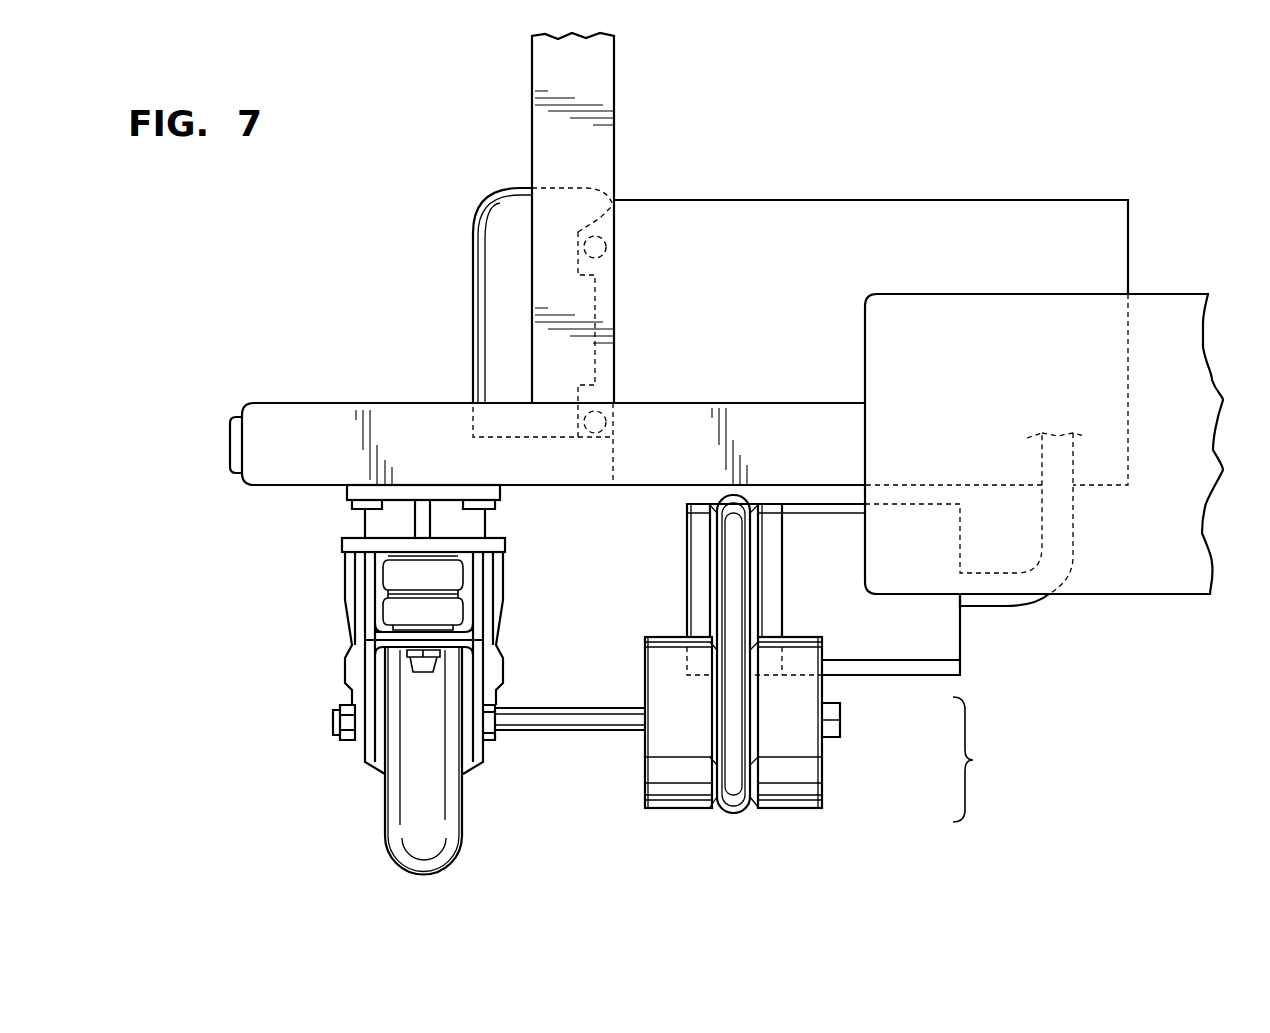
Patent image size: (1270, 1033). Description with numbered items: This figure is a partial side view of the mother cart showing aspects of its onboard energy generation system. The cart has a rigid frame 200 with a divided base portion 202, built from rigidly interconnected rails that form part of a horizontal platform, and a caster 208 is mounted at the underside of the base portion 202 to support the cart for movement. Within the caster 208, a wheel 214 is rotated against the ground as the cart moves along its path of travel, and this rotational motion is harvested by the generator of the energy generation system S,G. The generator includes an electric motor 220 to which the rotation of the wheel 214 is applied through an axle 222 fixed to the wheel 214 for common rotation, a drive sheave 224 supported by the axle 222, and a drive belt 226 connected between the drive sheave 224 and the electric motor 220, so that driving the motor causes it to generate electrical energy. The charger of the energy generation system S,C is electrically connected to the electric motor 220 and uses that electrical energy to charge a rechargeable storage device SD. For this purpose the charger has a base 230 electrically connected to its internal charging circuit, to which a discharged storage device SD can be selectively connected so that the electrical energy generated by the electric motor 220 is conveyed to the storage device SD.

The rigid frame 200 is at (477, 445).
The divided base portion 202 is at (232, 441).
The caster 208 is at (358, 703).
The wheel 214 is at (462, 818).
The electric motor 220 is at (882, 676).
The axle 222 is at (840, 722).
The drive sheave 224 is at (828, 792).
The drive belt 226 is at (745, 813).
The base 230 is at (593, 368).
The storage device SD is at (472, 272).
The energy generation system and charger S,C is at (812, 199).
The energy generation system and generator S,G is at (988, 759).